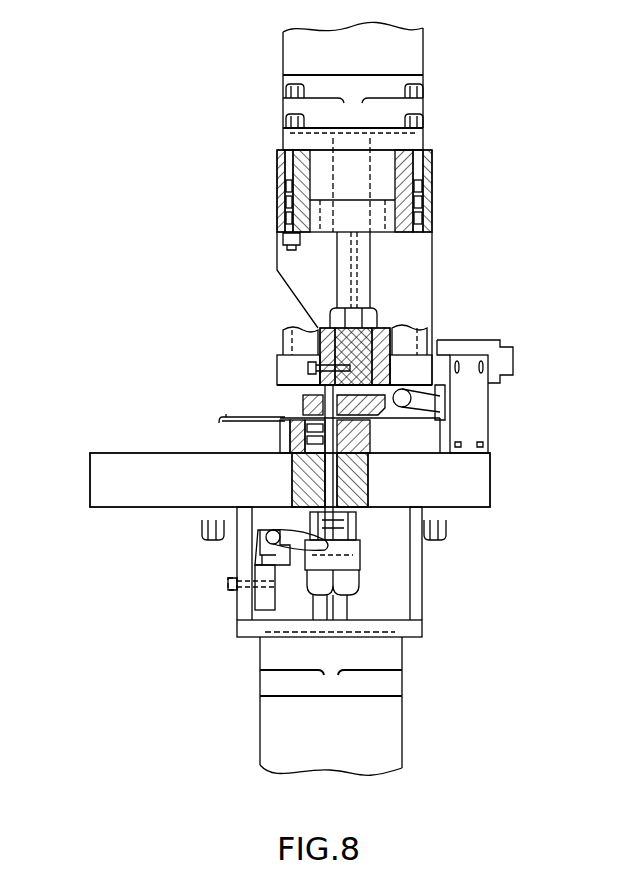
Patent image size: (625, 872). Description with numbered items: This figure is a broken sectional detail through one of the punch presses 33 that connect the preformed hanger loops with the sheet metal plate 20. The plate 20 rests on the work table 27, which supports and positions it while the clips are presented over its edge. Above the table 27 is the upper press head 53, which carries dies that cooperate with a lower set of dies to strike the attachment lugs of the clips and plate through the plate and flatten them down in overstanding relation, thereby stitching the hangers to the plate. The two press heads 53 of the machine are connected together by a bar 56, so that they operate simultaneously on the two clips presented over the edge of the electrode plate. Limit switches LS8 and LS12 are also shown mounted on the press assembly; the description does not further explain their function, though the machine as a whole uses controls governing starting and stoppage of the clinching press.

The sheet metal plate 20 is at (222, 418).
The work table 27 is at (90, 462).
The press 33 is at (265, 262).
The upper press head 53 is at (432, 218).
The bar 56 is at (433, 152).
The limit switch LS8 is at (467, 396).
The limit switch LS12 is at (255, 573).